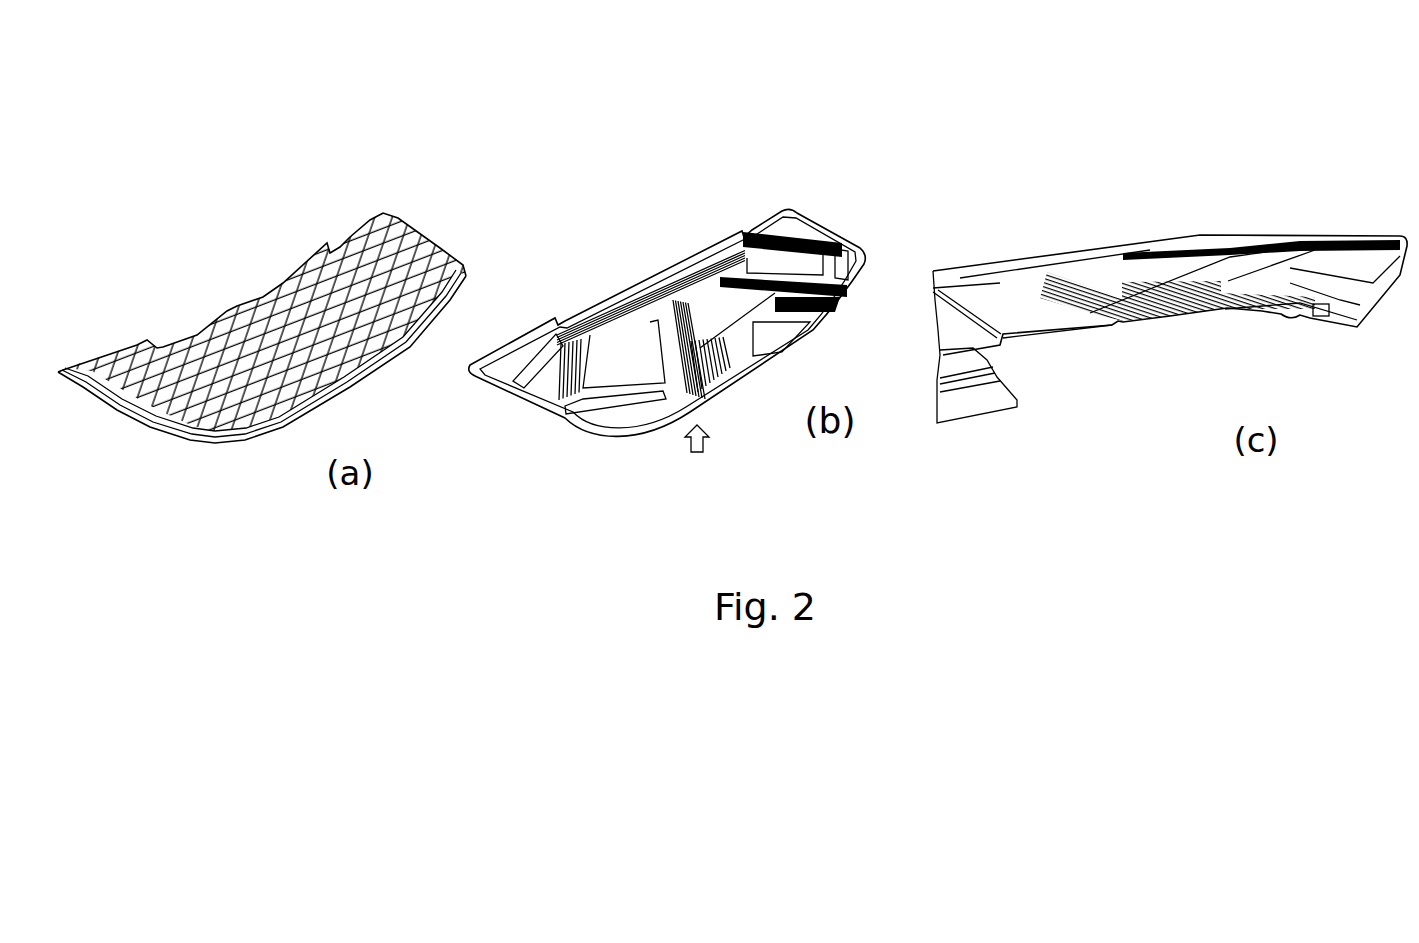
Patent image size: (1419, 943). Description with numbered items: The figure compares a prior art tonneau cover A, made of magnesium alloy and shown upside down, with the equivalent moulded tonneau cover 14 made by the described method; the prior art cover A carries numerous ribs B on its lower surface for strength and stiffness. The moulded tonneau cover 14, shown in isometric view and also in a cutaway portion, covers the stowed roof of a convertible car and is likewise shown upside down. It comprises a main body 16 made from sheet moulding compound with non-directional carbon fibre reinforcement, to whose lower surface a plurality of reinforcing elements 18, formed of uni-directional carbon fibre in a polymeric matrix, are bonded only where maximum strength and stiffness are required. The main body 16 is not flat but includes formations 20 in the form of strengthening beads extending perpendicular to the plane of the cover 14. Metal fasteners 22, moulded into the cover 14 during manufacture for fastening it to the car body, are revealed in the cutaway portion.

The moulded tonneau cover 14 is at (787, 185).
The main body 16 is at (628, 327).
The reinforcing elements 18 is at (582, 315).
The formations 20 is at (747, 268).
The metal fasteners 22 is at (565, 407).
The prior art tonneau cover A is at (387, 201).
The ribs B is at (207, 337).